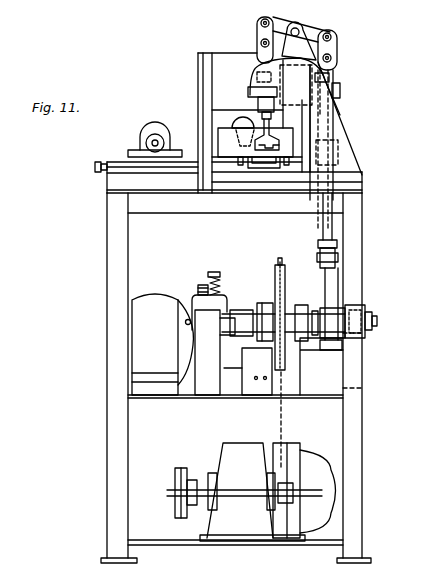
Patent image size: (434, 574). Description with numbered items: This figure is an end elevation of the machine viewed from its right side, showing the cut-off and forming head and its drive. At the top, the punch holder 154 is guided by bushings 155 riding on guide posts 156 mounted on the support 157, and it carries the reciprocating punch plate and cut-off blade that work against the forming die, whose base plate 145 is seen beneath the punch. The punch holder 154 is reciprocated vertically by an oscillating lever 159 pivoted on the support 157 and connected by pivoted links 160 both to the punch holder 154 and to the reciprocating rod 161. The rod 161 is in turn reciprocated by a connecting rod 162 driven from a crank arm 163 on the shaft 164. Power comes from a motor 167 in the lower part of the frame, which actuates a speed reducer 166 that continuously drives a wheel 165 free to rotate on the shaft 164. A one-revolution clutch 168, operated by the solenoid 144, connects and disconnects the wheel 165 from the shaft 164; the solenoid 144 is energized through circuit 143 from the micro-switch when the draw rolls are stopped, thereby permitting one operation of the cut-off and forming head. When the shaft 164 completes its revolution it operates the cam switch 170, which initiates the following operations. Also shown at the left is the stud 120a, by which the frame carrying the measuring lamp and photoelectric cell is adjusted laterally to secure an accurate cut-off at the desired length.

The stud 120a is at (94, 166).
The circuit 143 is at (265, 380).
The solenoid 144 is at (257, 375).
The base plate 145 is at (262, 160).
The punch holder 154 is at (270, 130).
The bushings 155 is at (256, 100).
The guide posts 156 is at (243, 118).
The support 157 is at (335, 115).
The oscillating lever 159 is at (322, 25).
The pivoted links 160 is at (257, 37).
The reciprocating rod 161 is at (330, 223).
The connecting rod 162 is at (330, 287).
The crank arm 163 is at (345, 341).
The shaft 164 is at (377, 321).
The wheel 165 is at (276, 268).
The speed reducer 166 is at (228, 448).
The motor 167 is at (293, 455).
The one-revolution clutch 168 is at (247, 318).
The cam switch 170 is at (224, 348).